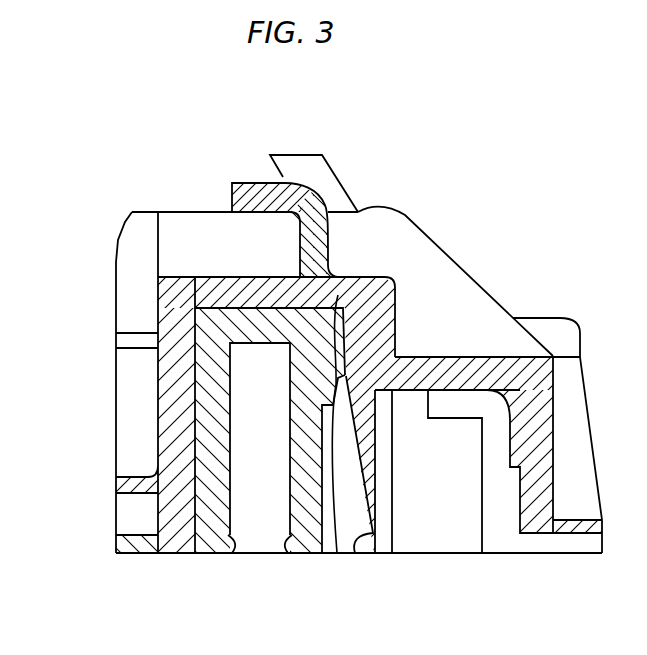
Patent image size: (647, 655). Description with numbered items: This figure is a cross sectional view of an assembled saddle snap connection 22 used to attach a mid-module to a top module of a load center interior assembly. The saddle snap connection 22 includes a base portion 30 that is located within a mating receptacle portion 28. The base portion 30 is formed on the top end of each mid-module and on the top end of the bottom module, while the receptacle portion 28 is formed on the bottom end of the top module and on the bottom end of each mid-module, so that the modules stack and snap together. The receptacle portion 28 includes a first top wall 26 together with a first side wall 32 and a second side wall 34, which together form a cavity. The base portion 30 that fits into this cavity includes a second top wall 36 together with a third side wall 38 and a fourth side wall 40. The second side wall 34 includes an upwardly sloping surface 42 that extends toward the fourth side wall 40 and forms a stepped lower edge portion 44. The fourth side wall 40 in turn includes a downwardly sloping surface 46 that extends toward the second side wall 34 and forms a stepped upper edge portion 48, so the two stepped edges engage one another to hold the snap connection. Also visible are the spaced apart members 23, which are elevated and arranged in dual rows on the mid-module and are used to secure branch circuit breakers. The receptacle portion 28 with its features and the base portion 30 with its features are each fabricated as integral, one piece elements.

The saddle snap connection 22 is at (476, 142).
The spaced apart members 23 is at (250, 198).
The first top wall 26 is at (218, 277).
The receptacle portion 28 is at (175, 302).
The base portion 30 is at (215, 527).
The first side wall 32 is at (158, 427).
The second side wall 34 is at (343, 368).
The second top wall 36 is at (256, 343).
The third side wall 38 is at (234, 555).
The fourth side wall 40 is at (286, 554).
The upwardly sloping surface 42 is at (355, 553).
The stepped lower edge portion 44 is at (333, 555).
The downwardly sloping surface 46 is at (338, 295).
The stepped upper edge portion 48 is at (396, 312).